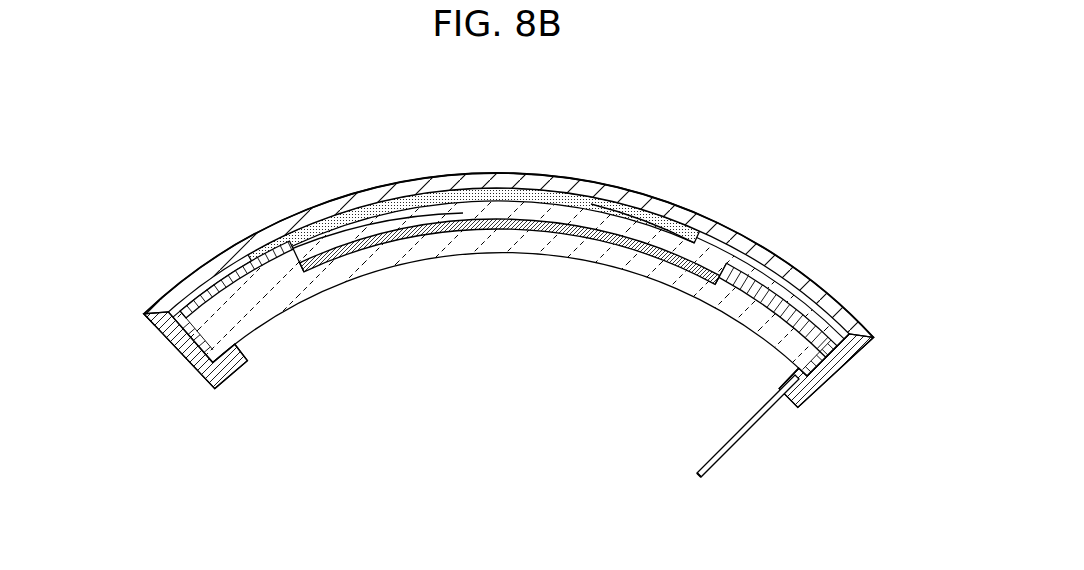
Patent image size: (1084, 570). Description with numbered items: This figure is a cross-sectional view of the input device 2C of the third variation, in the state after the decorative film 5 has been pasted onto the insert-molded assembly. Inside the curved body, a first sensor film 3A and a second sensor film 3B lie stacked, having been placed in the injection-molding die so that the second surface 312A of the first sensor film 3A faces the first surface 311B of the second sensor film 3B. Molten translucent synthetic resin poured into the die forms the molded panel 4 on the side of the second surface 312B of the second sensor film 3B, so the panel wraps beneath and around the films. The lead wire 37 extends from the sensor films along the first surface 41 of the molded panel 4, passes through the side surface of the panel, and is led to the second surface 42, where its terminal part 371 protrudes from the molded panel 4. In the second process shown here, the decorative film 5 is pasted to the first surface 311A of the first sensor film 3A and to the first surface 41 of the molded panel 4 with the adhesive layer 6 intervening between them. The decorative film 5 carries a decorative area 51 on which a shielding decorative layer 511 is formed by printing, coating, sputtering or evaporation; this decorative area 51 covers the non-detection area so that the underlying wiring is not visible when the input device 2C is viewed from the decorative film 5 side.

The input device 2C is at (668, 128).
The first sensor film 3A is at (663, 237).
The second sensor film 3B is at (677, 262).
The first surface of the first sensor film 311A is at (591, 204).
The first surface of the second sensor film 311B is at (463, 213).
The second surface of the first sensor film 312A is at (579, 228).
The second surface of the second sensor film 312B is at (460, 233).
The molded panel 4 is at (178, 352).
The first surface of the molded panel 41 is at (248, 279).
The second surface of the molded panel 42 is at (253, 336).
The decorative film 5 is at (668, 193).
The decorative area 51 is at (127, 310).
The decorative layer 511 is at (163, 300).
The adhesive layer 6 is at (348, 207).
The lead wire 37 is at (765, 408).
The terminal part 371 is at (700, 478).